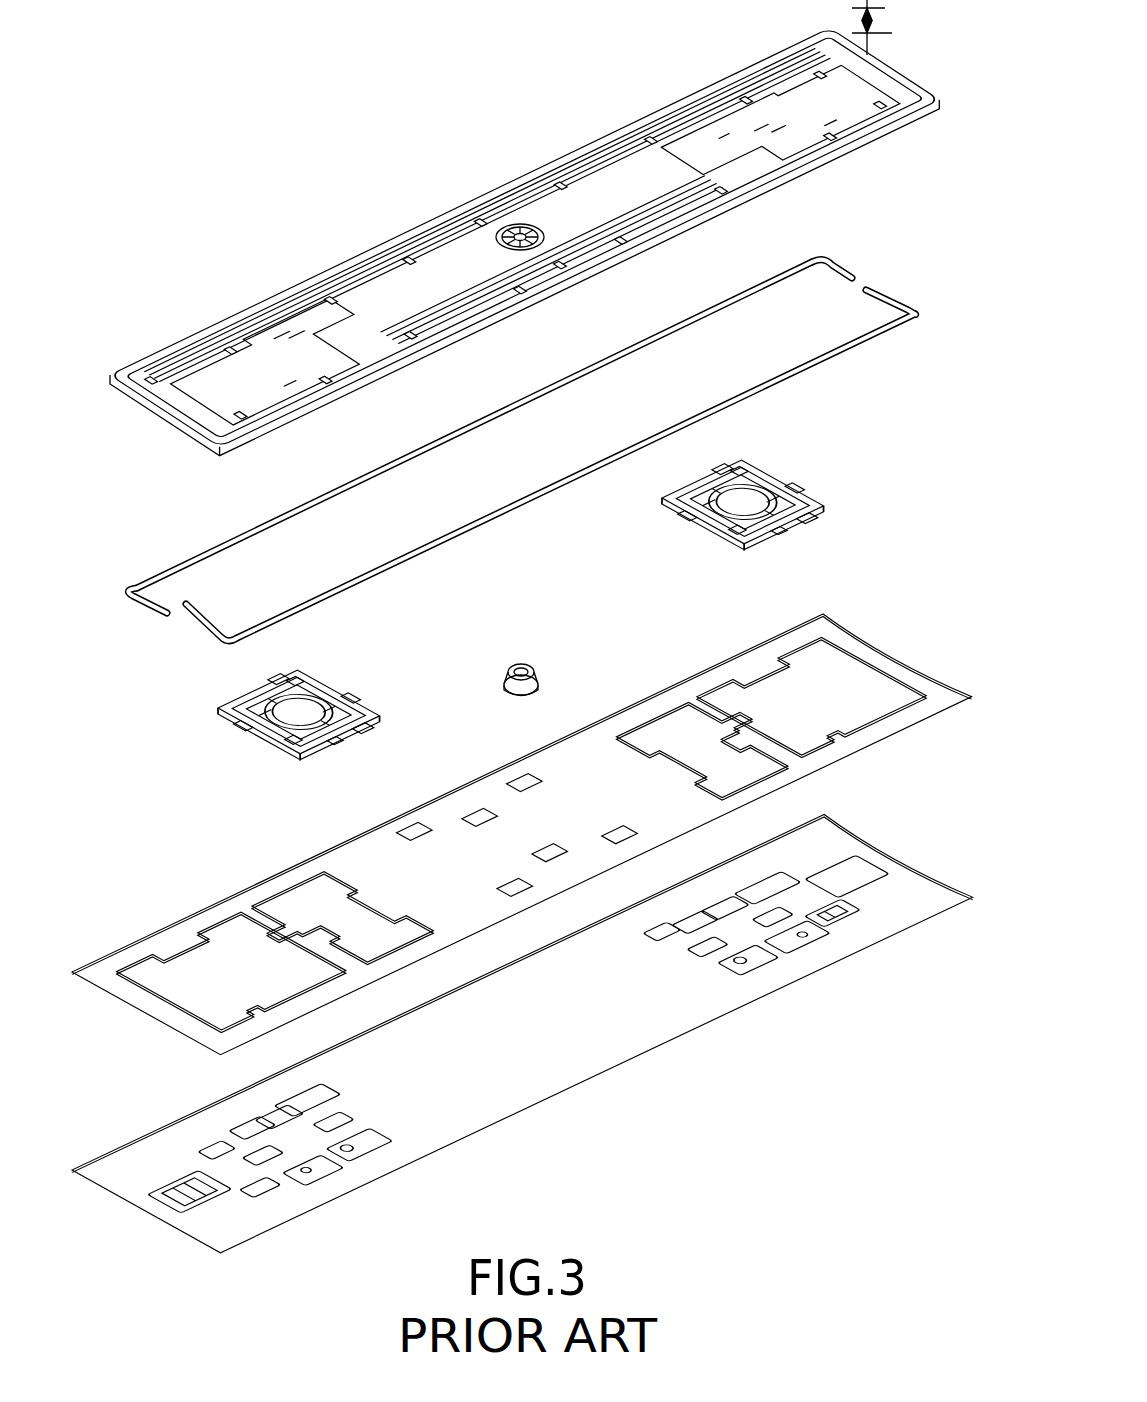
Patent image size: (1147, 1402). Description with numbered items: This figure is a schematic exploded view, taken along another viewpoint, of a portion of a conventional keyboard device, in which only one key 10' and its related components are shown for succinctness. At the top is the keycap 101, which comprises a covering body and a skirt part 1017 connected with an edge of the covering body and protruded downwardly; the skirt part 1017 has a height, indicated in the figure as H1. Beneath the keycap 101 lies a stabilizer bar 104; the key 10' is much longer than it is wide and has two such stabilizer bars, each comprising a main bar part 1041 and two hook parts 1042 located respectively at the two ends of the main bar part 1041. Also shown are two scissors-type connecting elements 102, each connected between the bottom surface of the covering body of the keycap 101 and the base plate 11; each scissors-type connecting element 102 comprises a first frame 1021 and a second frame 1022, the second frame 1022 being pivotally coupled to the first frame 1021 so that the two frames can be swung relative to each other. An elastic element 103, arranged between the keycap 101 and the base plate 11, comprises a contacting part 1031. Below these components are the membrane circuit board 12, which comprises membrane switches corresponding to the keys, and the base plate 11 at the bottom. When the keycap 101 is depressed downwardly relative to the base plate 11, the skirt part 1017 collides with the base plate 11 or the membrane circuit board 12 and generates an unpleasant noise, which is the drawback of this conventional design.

The key 10' is at (526, 627).
The keycap 101 is at (610, 126).
The skirt part 1017 is at (883, 67).
The height of frame H1 is at (884, 27).
The stabilizer bar 104 is at (187, 556).
The main bar part 1041 is at (272, 520).
The hook part 1042 is at (870, 280).
The scissors-type connecting element 102 is at (768, 450).
The first frame 1021 is at (790, 495).
The second frame 1022 is at (708, 527).
The elastic element 103 is at (524, 661).
The contacting part 1031 is at (517, 700).
The membrane circuit board 12 is at (342, 836).
The base plate 11 is at (545, 1078).